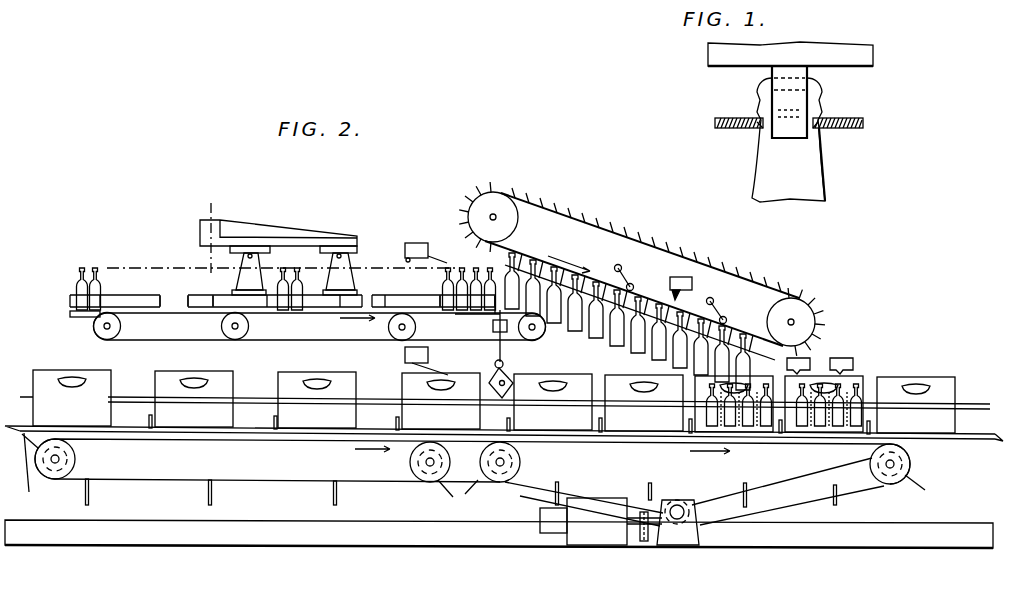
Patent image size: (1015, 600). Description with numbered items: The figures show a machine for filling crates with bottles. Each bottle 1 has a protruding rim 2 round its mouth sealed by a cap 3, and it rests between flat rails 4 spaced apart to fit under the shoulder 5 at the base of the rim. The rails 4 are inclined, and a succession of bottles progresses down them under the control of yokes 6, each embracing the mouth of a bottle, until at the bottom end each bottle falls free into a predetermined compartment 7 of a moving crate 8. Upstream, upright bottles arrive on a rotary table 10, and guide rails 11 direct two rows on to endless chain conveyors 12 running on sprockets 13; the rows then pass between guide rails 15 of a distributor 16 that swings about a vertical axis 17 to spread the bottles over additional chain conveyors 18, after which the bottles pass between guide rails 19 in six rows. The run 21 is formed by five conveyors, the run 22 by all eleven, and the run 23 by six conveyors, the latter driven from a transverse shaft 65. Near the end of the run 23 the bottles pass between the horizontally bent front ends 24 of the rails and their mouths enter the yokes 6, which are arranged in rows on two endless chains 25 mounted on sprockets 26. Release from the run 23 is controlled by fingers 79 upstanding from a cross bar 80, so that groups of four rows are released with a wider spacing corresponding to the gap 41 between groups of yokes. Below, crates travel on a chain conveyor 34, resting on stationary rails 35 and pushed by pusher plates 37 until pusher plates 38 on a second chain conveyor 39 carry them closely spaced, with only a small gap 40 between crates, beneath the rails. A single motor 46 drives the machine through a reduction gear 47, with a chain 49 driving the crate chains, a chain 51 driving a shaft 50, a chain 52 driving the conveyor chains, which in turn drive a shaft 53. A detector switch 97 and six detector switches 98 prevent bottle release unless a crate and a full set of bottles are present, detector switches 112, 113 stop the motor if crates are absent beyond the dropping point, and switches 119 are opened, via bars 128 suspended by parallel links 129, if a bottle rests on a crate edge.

In FIG. 1, the bottle 1 is at (800, 168).
In FIG. 2, the bottle 1 is at (78, 286).
In FIG. 1, the protruding rim 2 is at (760, 105).
In FIG. 1, the cap 3 is at (806, 86).
In FIG. 1, the flat rails 4 is at (715, 122).
In FIG. 2, the flat rails 4 is at (598, 294).
In FIG. 1, the shoulder 5 is at (757, 128).
In FIG. 1, the yokes 6 is at (797, 120).
In FIG. 2, the yokes 6 is at (722, 262).
In FIG. 2, the compartment 7 is at (750, 415).
In FIG. 2, the crate 8 is at (48, 375).
In FIG. 2, the rotary table 10 is at (70, 313).
In FIG. 2, the guide rails 11 is at (148, 290).
In FIG. 2, the endless chain conveyors 12 is at (140, 340).
In FIG. 2, the sprockets 13 is at (100, 330).
In FIG. 2, the guide rails 15 is at (200, 303).
In FIG. 2, the distributor 16 is at (290, 224).
In FIG. 2, the vertical axis 17 is at (211, 203).
In FIG. 2, the additional chain conveyors 18 is at (275, 340).
In FIG. 2, the guide rails 19 is at (416, 303).
In FIG. 2, the run 21 is at (178, 318).
In FIG. 2, the run 22 is at (325, 318).
In FIG. 2, the run 23 is at (472, 314).
In FIG. 2, the horizontally bent front ends 24 is at (523, 254).
In FIG. 2, the endless chains 25 is at (782, 292).
In FIG. 2, the sprockets 26 is at (483, 203).
In FIG. 2, the chain conveyor 34 is at (107, 442).
In FIG. 2, the stationary rails 35 is at (5, 427).
In FIG. 2, the pusher plates 37 is at (290, 458).
In FIG. 2, the pusher plates 38 is at (555, 497).
In FIG. 2, the second chain conveyor 39 is at (548, 443).
In FIG. 2, the gap 40 is at (597, 375).
In FIG. 2, the gap 41 is at (667, 352).
In FIG. 2, the motor 46 is at (592, 535).
In FIG. 2, the reduction gear 47 is at (678, 535).
In FIG. 2, the chain 49 is at (775, 498).
In FIG. 2, the shaft 50 is at (500, 466).
In FIG. 2, the chain 51 is at (582, 474).
In FIG. 2, the chain 52 is at (444, 481).
In FIG. 2, the shaft 53 is at (56, 464).
In FIG. 2, the transverse shaft 65 is at (535, 333).
In FIG. 2, the fingers 79 is at (621, 299).
In FIG. 2, the cross bar 80 is at (494, 328).
In FIG. 2, the detector switch 97 is at (405, 352).
In FIG. 2, the detector switches 98 is at (415, 243).
In FIG. 2, the detector switch 112 is at (800, 360).
In FIG. 2, the detector switch 113 is at (842, 360).
In FIG. 2, the switches 119 is at (700, 285).
In FIG. 2, the bars 128 is at (726, 322).
In FIG. 2, the parallel links 129 is at (622, 266).